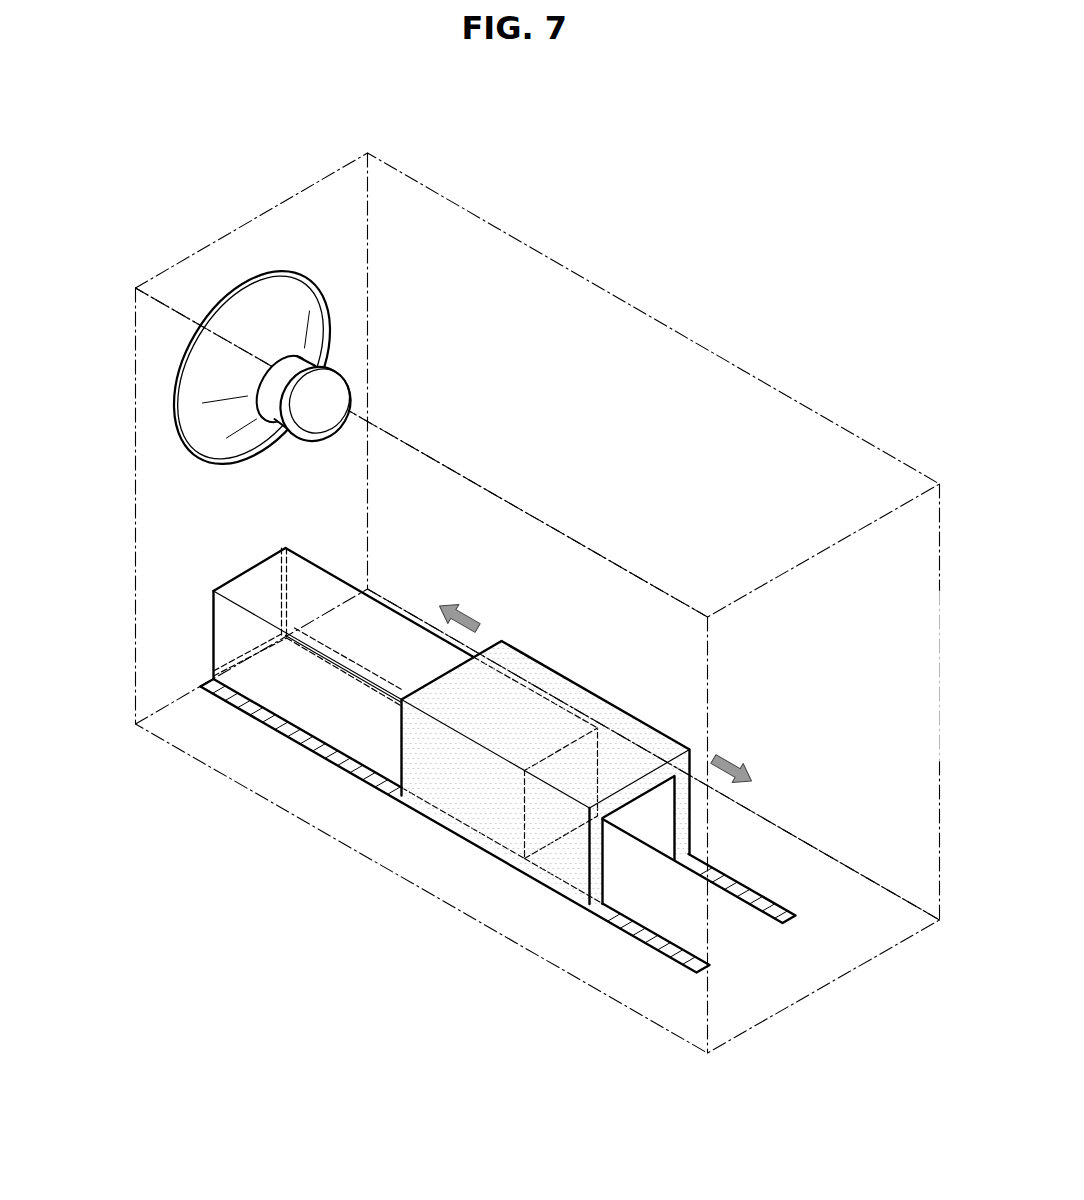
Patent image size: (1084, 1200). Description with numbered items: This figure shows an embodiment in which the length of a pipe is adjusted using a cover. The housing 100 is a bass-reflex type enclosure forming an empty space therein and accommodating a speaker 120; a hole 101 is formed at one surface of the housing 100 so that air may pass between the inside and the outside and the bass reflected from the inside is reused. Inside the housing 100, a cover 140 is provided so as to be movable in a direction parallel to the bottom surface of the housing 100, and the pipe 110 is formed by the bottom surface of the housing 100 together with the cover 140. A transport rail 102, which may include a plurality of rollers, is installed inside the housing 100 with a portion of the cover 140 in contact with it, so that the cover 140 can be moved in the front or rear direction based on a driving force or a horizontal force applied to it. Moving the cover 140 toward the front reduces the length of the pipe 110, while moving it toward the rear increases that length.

The housing 100 is at (436, 177).
The hole 101 is at (252, 654).
The transport rail 102 is at (655, 937).
The pipe 110 is at (353, 721).
The speaker 120 is at (257, 303).
The cover 140 is at (581, 854).